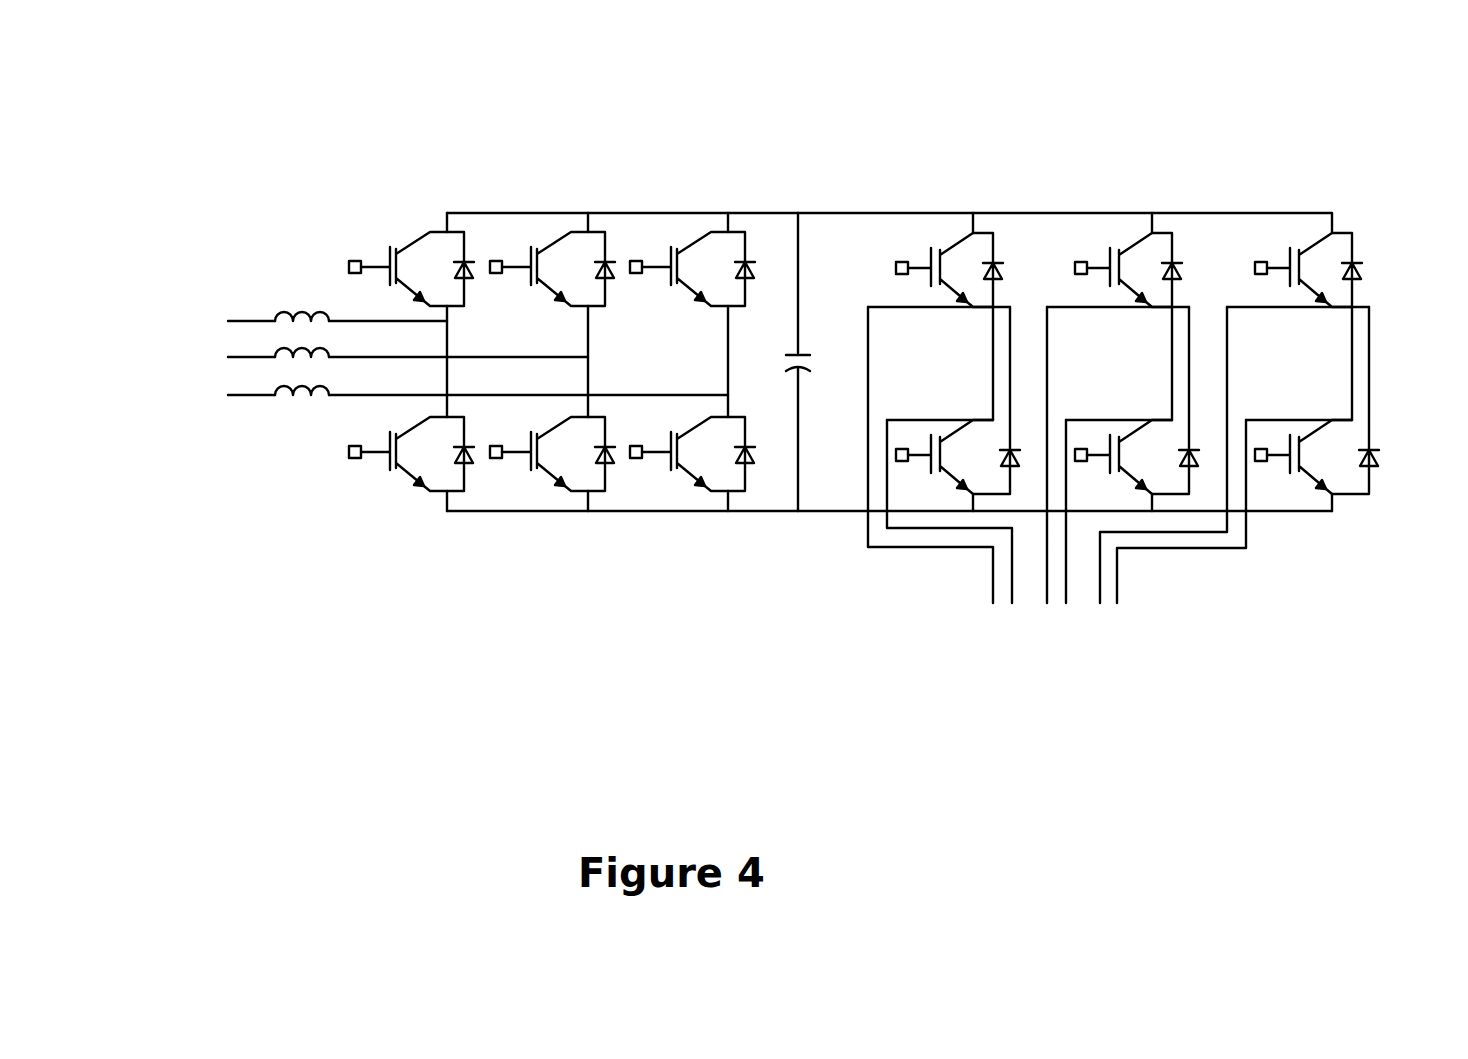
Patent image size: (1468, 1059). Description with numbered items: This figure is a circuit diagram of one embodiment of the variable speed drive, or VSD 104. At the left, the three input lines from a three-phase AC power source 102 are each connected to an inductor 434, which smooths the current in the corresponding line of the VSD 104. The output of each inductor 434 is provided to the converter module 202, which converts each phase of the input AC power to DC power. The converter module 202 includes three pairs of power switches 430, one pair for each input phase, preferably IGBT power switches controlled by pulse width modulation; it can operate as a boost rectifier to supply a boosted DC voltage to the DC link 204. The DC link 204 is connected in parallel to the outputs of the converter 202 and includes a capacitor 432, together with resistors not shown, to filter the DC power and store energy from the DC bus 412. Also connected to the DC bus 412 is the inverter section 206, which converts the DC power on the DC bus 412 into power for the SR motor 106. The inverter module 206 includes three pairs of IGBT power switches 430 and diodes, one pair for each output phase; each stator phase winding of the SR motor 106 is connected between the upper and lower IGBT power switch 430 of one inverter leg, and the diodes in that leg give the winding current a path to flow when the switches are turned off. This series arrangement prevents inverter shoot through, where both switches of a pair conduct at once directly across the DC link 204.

The AC power source 102 is at (414, 345).
The variable speed drive 104 is at (987, 135).
The SR motor 106 is at (1080, 692).
The converter module 202 is at (609, 535).
The DC link 204 is at (806, 527).
The inverter section 206 is at (1295, 534).
The DC bus 412 is at (798, 212).
The IGBT power switch 430 is at (413, 228).
The capacitor 432 is at (831, 360).
The inductor 434 is at (302, 398).